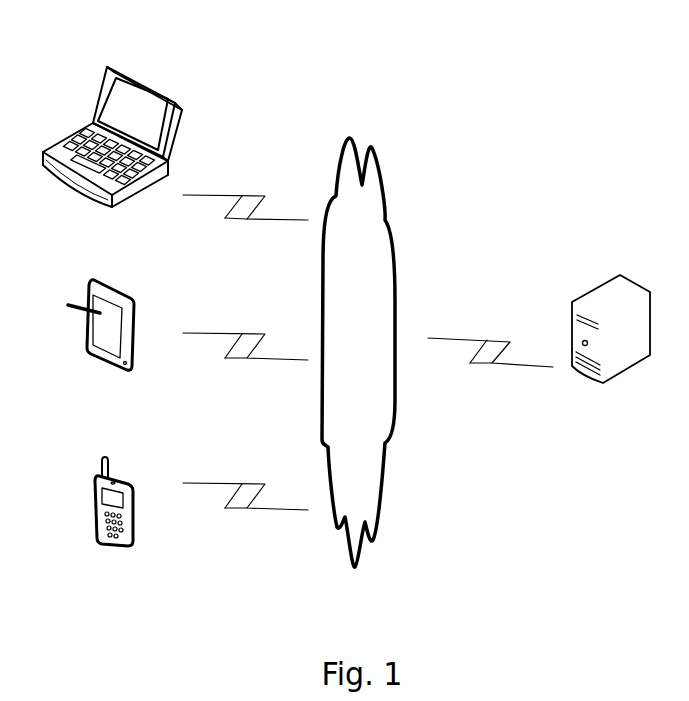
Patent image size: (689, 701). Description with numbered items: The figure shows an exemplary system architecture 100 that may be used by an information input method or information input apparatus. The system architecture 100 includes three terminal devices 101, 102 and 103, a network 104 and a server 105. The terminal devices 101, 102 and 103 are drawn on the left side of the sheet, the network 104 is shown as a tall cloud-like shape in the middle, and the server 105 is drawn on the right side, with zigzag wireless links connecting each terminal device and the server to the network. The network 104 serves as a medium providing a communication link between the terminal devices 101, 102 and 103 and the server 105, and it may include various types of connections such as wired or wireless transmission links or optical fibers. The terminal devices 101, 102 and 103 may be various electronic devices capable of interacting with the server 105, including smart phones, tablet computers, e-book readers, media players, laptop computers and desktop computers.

The system architecture 100 is at (571, 61).
The terminal device 101 is at (114, 520).
The terminal device 102 is at (101, 344).
The terminal device 103 is at (112, 152).
The network 104 is at (358, 352).
The server 105 is at (611, 349).